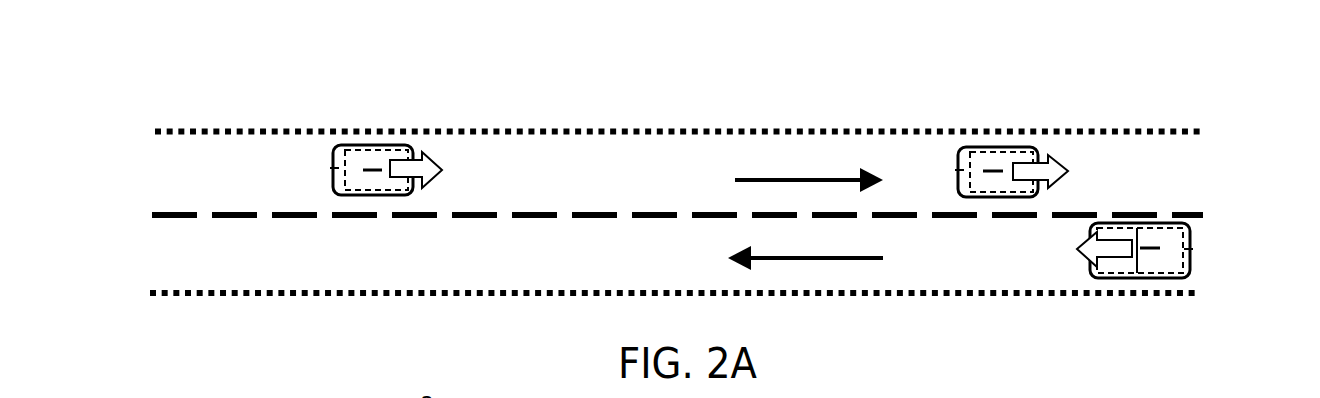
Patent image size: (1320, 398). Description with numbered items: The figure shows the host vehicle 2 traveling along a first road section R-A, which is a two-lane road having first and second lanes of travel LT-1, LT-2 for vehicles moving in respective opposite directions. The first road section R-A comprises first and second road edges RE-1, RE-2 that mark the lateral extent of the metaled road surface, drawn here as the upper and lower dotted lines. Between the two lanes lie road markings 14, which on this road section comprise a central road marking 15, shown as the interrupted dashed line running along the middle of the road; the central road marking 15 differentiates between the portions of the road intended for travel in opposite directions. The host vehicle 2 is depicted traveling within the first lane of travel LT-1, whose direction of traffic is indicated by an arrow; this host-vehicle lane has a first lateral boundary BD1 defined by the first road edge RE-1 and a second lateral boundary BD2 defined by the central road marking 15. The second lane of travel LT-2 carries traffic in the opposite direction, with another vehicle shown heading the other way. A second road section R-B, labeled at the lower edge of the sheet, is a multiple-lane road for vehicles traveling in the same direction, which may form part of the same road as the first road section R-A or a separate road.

The host vehicle 2 is at (363, 170).
The road markings 14 is at (1168, 182).
The central road marking 15 is at (1150, 210).
The first lateral boundary BD1 is at (652, 128).
The second lateral boundary BD2 is at (652, 215).
The first lane of travel LT-1 is at (752, 173).
The second lane of travel LT-2 is at (752, 255).
The first road section R-A is at (1050, 117).
The first road edge RE-1 is at (1142, 130).
The second road edge RE-2 is at (1138, 290).
The second road section R-B is at (1053, 397).